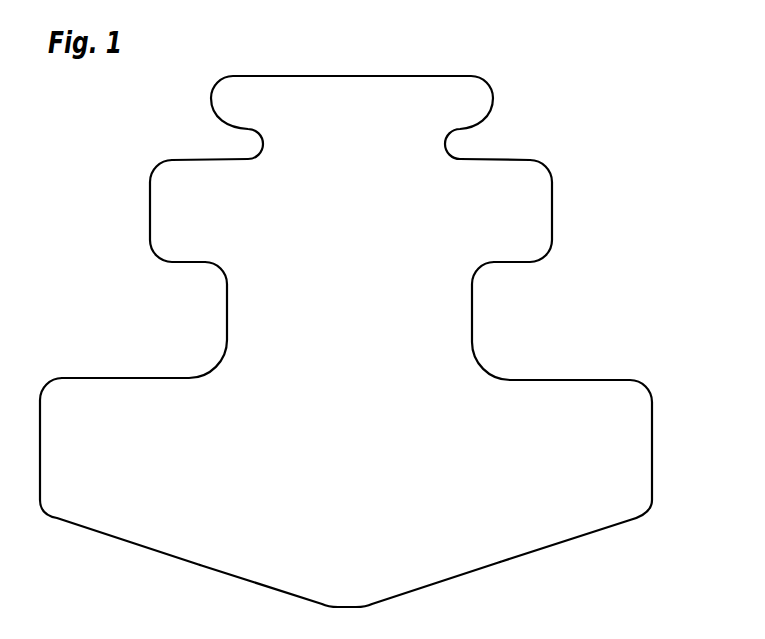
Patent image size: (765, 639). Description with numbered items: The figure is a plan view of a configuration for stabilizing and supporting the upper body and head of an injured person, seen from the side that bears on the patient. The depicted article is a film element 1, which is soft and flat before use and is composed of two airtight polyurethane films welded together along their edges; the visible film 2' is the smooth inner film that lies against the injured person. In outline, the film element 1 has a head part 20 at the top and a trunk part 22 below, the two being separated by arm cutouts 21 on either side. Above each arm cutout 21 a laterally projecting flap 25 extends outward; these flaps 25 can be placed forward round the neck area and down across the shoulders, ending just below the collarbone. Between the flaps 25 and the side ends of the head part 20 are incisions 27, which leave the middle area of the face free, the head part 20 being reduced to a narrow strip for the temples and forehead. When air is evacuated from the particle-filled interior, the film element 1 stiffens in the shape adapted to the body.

The film element 1 is at (582, 463).
The airtight film 2' is at (594, 359).
The head part 20 is at (448, 100).
The arm cutouts 21 is at (198, 292).
The trunk part 22 is at (505, 508).
The flaps 25 is at (507, 223).
The incisions 27 is at (478, 144).